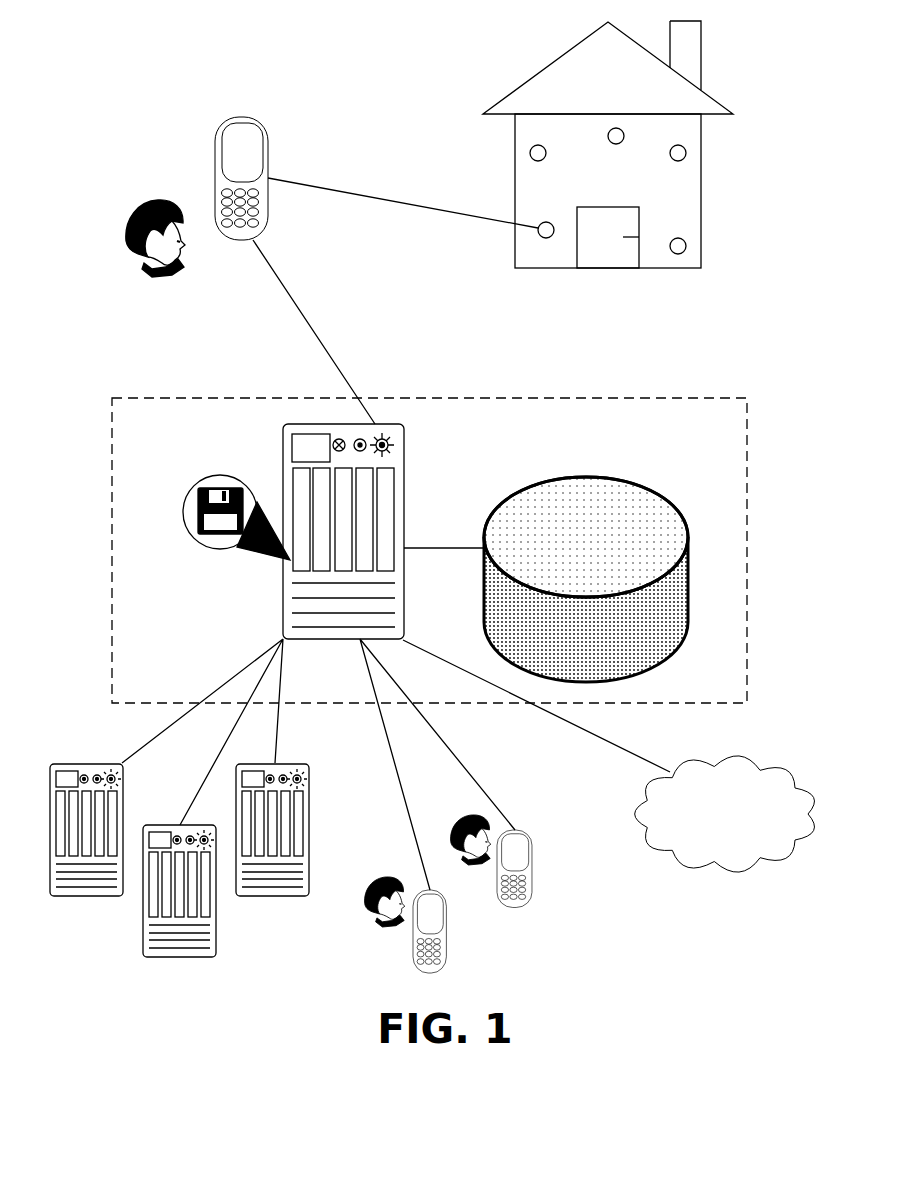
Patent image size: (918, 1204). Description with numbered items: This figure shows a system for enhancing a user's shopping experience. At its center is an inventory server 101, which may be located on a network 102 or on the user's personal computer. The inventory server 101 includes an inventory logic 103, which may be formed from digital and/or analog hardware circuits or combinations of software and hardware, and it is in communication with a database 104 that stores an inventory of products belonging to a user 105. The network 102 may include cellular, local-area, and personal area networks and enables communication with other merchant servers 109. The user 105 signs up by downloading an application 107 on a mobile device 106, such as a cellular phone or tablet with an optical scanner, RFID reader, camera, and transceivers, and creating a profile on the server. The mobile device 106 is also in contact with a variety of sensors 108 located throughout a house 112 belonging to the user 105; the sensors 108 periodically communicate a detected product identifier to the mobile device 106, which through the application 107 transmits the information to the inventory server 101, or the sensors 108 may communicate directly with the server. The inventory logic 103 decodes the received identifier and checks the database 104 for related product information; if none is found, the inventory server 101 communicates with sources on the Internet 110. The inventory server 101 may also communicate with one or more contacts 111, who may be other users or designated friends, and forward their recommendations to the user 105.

The inventory server 101 is at (343, 424).
The network 102 is at (577, 398).
The inventory logic 103 is at (200, 478).
The database 104 is at (688, 547).
The user 105 is at (140, 200).
The mobile device 106 is at (232, 118).
The application 107 is at (248, 146).
The sensors 108 is at (538, 227).
The merchant servers 109 is at (178, 958).
The Internet 110 is at (670, 857).
The contacts 111 is at (447, 933).
The house 112 is at (518, 87).